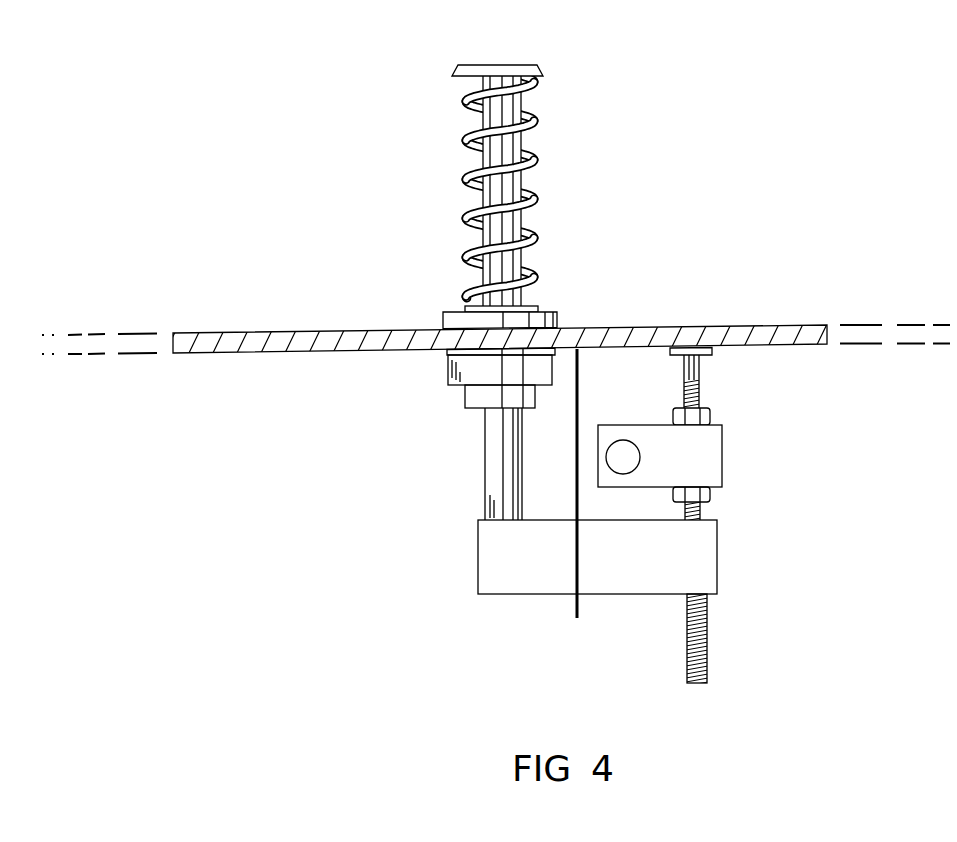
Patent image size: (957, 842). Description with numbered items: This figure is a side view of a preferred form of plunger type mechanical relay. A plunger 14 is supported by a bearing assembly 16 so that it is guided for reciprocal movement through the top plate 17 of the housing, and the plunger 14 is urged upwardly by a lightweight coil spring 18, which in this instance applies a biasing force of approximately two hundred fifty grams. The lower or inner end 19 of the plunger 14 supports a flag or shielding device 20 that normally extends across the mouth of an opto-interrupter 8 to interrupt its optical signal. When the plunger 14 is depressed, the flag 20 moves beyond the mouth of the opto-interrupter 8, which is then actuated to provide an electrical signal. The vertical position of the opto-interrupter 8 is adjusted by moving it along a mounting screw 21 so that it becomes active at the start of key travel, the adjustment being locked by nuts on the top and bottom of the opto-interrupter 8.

The plunger 14 is at (506, 139).
The coil spring 18 is at (540, 186).
The bearing assembly 16 is at (442, 311).
The top plate 17 is at (647, 326).
The opto-interrupter 8 is at (708, 452).
The lower or inner end 19 is at (455, 608).
The flag or shielding device 20 is at (682, 553).
The mounting screw 21 is at (707, 635).